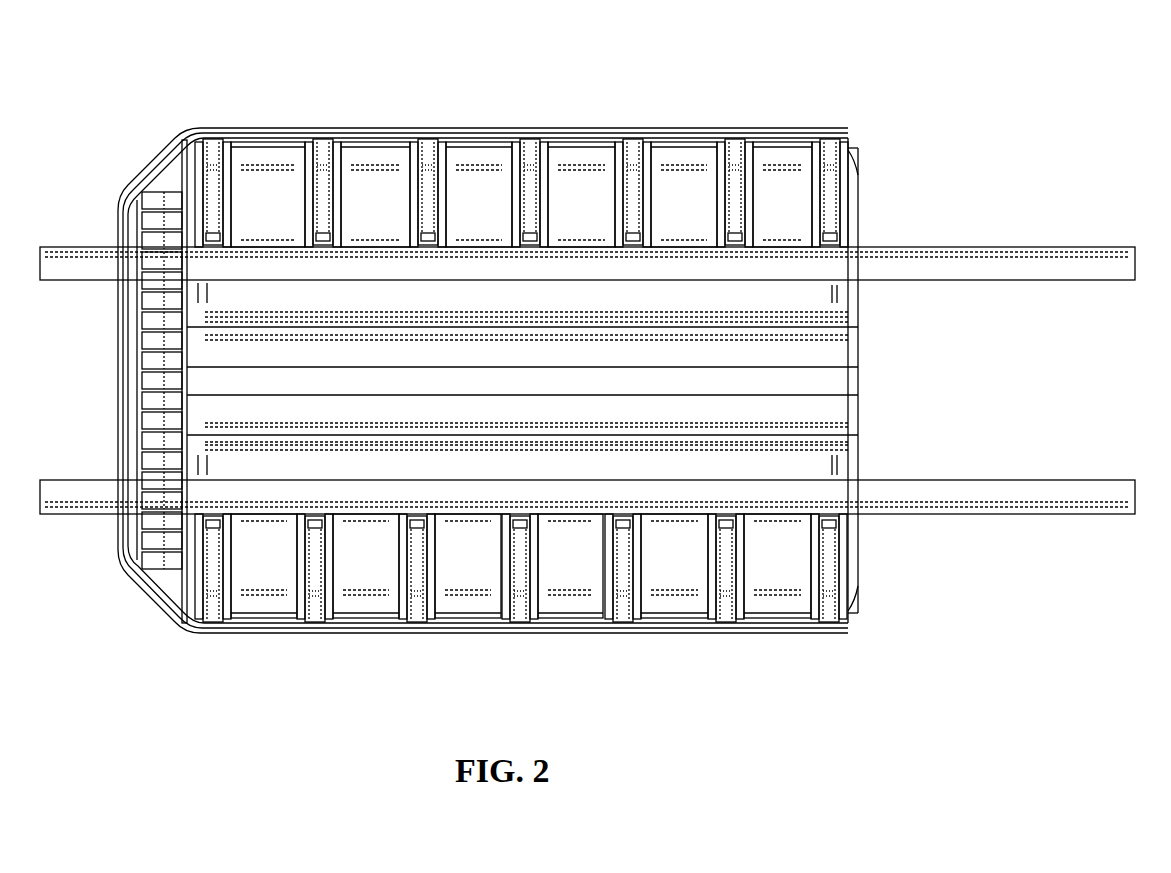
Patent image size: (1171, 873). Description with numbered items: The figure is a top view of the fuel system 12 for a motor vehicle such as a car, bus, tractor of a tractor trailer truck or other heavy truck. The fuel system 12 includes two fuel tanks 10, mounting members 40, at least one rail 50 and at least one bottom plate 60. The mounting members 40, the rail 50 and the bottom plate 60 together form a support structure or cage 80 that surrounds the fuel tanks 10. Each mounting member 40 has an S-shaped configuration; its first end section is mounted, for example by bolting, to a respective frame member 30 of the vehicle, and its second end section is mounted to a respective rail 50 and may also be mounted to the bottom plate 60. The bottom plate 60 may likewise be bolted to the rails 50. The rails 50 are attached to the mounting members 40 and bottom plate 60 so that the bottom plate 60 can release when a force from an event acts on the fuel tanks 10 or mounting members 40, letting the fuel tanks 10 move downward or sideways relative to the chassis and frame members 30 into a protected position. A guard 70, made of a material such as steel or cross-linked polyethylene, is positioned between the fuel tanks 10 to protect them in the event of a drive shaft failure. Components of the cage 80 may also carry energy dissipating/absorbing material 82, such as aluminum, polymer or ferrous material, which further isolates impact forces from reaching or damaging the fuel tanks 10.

The fuel system 12 is at (912, 127).
The fuel tank 10 is at (861, 297).
The mounting member 40 is at (527, 127).
The frame member 30 is at (905, 515).
The guard 70 is at (868, 378).
The cage 80 is at (733, 118).
The energy dissipating/absorbing material 82 is at (258, 625).
The bottom plate 60 is at (150, 605).
The rail 50 is at (503, 636).